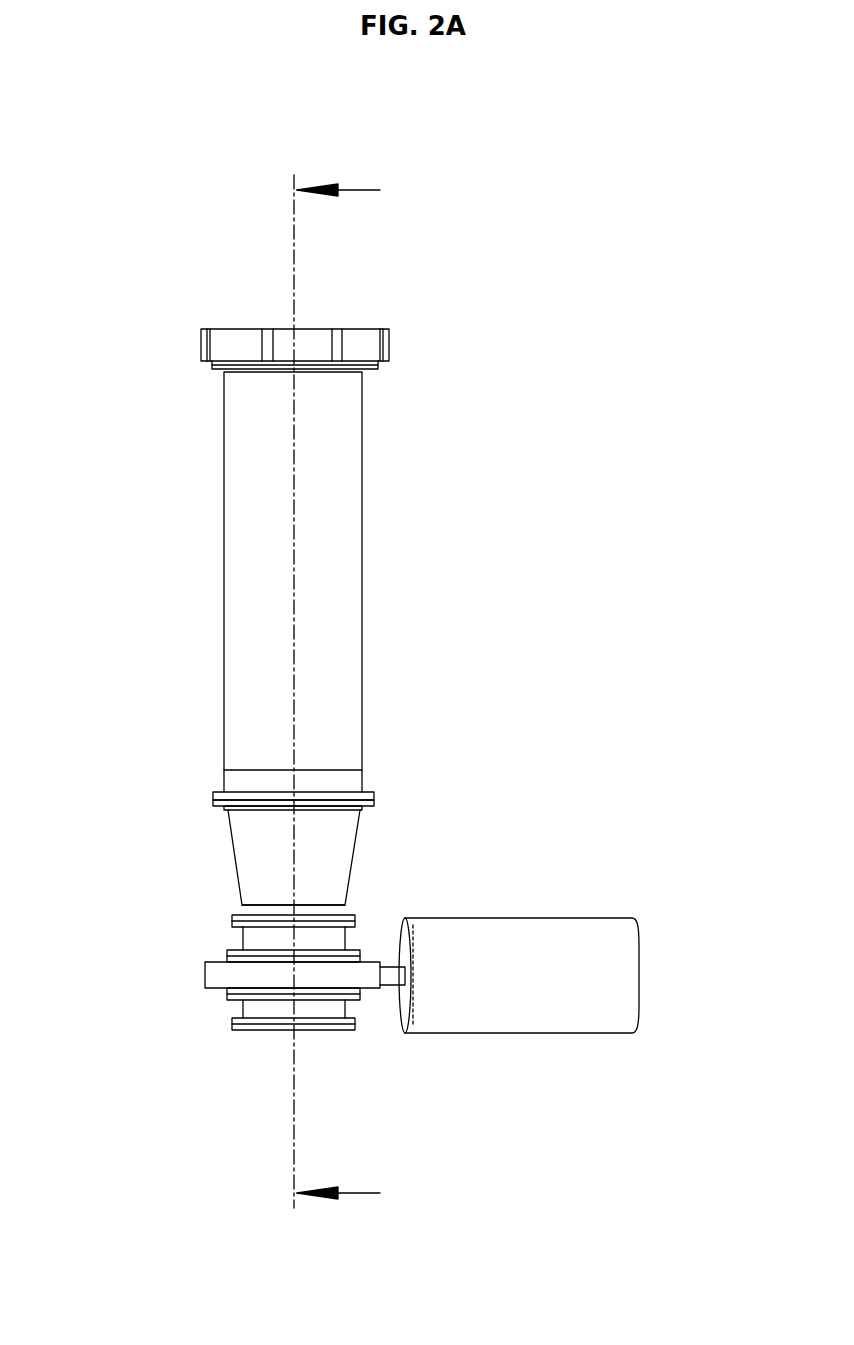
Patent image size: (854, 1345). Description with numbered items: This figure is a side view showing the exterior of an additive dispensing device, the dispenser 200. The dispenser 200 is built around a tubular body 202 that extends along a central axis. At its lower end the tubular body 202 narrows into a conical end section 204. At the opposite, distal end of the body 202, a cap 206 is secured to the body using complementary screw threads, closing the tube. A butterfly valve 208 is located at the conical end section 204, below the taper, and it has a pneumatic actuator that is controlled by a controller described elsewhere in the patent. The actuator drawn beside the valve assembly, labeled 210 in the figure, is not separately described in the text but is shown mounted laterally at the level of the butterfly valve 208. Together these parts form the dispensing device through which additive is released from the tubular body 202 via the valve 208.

The dispenser 200 is at (638, 278).
The tubular body 202 is at (363, 593).
The conical end section 204 is at (230, 836).
The cap 206 is at (200, 348).
The butterfly valve 208 is at (200, 921).
The side cylinder 210 is at (555, 918).